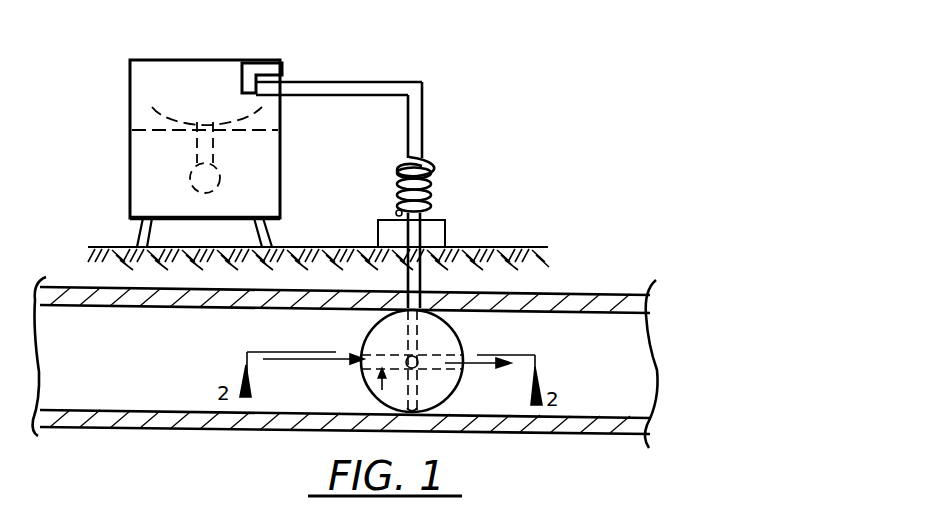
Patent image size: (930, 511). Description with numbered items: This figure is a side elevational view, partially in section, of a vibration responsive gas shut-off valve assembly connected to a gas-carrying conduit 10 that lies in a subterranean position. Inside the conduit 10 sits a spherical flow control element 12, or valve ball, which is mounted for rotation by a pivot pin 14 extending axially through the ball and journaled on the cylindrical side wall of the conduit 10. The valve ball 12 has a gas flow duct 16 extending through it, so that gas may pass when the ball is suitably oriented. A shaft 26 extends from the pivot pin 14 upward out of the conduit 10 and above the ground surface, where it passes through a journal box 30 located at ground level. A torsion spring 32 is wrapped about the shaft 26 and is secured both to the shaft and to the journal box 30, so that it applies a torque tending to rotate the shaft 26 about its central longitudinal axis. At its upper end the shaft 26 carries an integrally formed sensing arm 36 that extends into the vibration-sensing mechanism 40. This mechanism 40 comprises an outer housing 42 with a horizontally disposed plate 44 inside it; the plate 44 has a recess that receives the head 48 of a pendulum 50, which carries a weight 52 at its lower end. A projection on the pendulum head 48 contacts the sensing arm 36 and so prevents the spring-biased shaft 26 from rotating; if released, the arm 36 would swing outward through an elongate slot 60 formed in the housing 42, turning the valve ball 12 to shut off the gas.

The gas-carrying conduit 10 is at (588, 293).
The spherical flow control element 12 is at (437, 386).
The pivot pin 14 is at (408, 330).
The gas flow duct 16 is at (376, 394).
The shaft 26 is at (422, 124).
The journal box 30 is at (445, 232).
The torsion spring 32 is at (432, 162).
The sensing arm 36 is at (334, 82).
The vibration-sensing mechanism 40 is at (197, 58).
The outer housing 42 is at (281, 158).
The horizontally disposed plate 44 is at (142, 129).
The head 48 is at (186, 104).
The pendulum 50 is at (196, 150).
The weight 52 is at (215, 180).
The elongate slot 60 is at (247, 63).